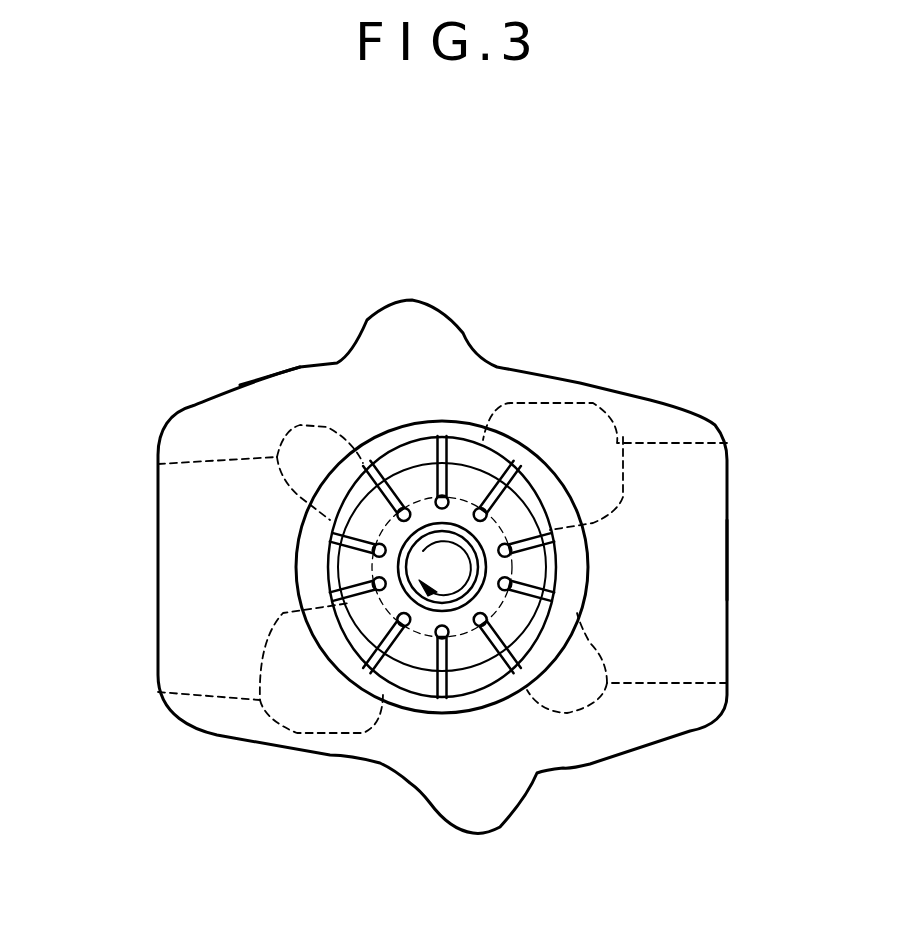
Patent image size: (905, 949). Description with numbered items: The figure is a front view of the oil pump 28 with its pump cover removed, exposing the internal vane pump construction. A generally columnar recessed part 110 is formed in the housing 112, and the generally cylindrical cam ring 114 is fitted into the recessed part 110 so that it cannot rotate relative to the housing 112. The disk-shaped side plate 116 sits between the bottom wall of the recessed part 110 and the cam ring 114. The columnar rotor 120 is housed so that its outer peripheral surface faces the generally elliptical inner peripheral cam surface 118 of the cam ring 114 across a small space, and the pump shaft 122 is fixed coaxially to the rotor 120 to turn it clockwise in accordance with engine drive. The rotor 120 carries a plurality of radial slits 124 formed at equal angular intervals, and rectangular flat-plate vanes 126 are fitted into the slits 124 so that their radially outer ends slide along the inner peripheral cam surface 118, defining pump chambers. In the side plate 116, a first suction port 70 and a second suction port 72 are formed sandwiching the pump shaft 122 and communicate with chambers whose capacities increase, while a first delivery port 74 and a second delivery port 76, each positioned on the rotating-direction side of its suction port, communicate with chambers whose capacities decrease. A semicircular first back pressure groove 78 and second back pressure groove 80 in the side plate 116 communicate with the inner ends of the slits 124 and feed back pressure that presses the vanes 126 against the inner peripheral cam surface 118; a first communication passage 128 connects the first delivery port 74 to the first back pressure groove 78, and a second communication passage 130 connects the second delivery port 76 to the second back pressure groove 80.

The oil pump 28 is at (143, 278).
The first suction port 70 is at (727, 683).
The second suction port 72 is at (158, 464).
The first delivery port 74 is at (158, 692).
The second delivery port 76 is at (727, 443).
The first back pressure groove 78 is at (482, 640).
The second back pressure groove 80 is at (425, 445).
The recessed part 110 is at (583, 600).
The housing 112 is at (292, 386).
The cam ring 114 is at (577, 552).
The side plate 116 is at (457, 445).
The inner peripheral cam surface 118 is at (388, 455).
The rotor 120 is at (462, 640).
The pump shaft 122 is at (432, 600).
The slits 124 is at (328, 552).
The vanes 126 is at (326, 590).
The first communication passage 128 is at (408, 685).
The second communication passage 130 is at (482, 480).